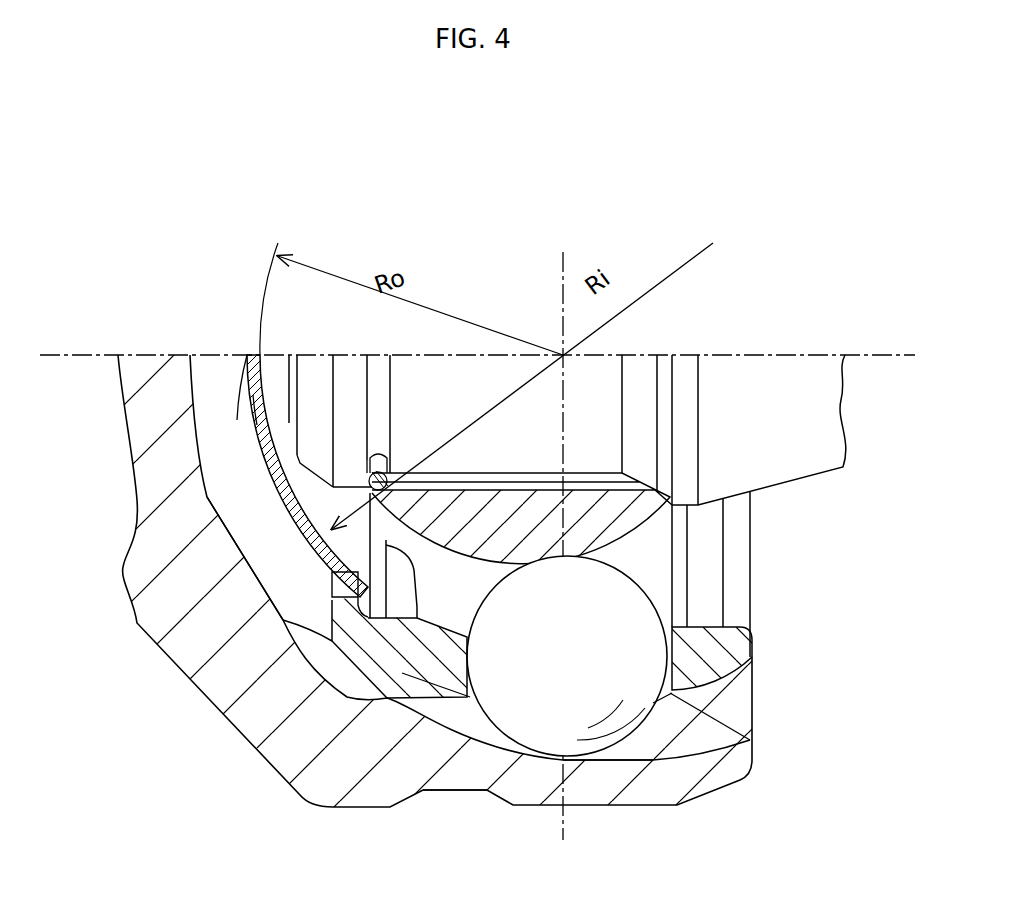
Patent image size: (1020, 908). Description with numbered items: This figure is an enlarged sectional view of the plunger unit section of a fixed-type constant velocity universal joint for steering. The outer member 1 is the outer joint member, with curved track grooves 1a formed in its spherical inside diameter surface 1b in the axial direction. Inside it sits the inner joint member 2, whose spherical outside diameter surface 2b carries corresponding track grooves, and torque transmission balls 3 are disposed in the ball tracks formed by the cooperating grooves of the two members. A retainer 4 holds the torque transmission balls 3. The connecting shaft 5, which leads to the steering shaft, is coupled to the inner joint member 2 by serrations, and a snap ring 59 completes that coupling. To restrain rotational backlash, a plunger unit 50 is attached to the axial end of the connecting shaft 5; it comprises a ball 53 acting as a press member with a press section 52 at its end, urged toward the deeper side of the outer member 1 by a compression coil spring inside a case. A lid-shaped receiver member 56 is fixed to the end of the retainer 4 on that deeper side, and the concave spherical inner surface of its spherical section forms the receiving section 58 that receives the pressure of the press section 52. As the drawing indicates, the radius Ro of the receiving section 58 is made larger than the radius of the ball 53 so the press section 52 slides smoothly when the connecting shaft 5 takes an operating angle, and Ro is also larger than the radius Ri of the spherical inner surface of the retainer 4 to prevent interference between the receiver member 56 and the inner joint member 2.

The outer member 1 is at (372, 808).
The track grooves 1a is at (652, 760).
The spherical inside diameter surface 1b is at (437, 676).
The inner joint member 2 is at (592, 512).
The spherical outside diameter surface 2b is at (465, 640).
The torque transmission balls 3 is at (606, 660).
The retainer 4 is at (758, 657).
The connecting shaft 5 is at (820, 463).
The plunger unit 50 is at (280, 436).
The press section 52 is at (245, 354).
The ball 53 is at (277, 398).
The receiver member 56 is at (247, 365).
The receiving section 58 is at (265, 365).
The snap ring 59 is at (300, 478).